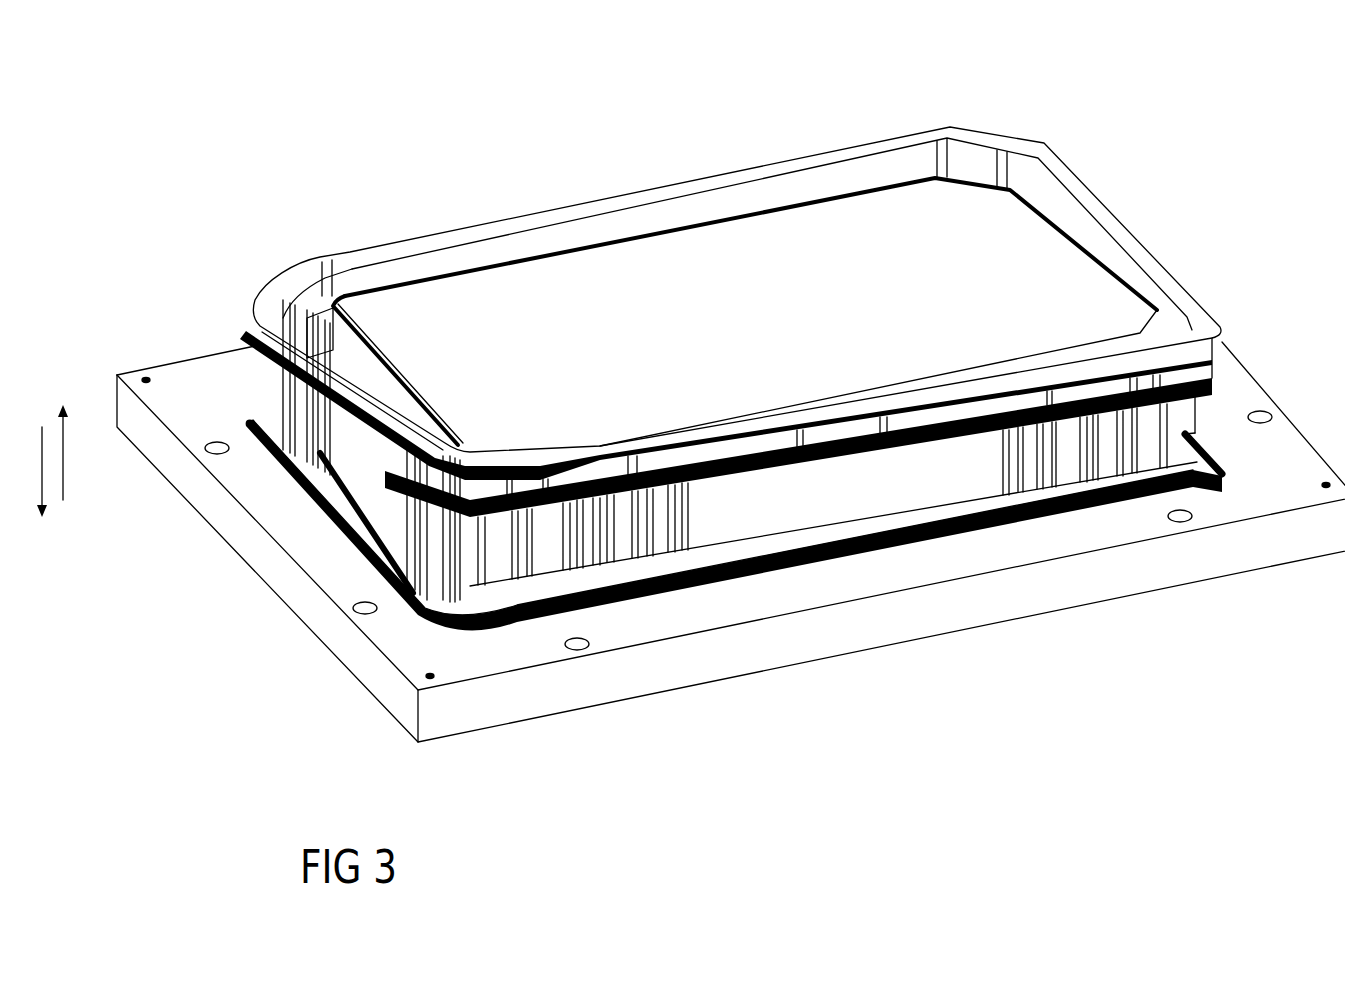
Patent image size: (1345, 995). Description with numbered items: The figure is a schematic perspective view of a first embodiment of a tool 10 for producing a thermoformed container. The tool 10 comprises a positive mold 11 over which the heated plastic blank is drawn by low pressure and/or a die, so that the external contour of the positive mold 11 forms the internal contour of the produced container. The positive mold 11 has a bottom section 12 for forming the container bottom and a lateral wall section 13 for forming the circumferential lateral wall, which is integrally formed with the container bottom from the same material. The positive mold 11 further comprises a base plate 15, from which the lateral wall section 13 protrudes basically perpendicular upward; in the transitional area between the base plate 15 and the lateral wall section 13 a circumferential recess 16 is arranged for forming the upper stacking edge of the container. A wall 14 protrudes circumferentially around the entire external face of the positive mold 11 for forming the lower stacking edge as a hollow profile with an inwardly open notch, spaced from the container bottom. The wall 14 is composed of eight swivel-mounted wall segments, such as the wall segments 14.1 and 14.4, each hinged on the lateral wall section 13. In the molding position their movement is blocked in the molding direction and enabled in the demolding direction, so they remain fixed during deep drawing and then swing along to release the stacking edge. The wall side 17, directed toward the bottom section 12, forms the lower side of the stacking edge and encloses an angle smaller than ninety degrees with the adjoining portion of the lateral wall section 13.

The tool 10 is at (150, 216).
The positive mold 11 is at (753, 192).
The bottom section 12 is at (657, 267).
The lateral wall section 13 is at (962, 483).
The wall 14 is at (1048, 149).
The wall segment 14.1 is at (272, 290).
The wall segment 14.4 is at (1030, 137).
The base plate 15 is at (753, 643).
The circumferential recess 16 is at (1207, 434).
The wall side 17 is at (1140, 247).